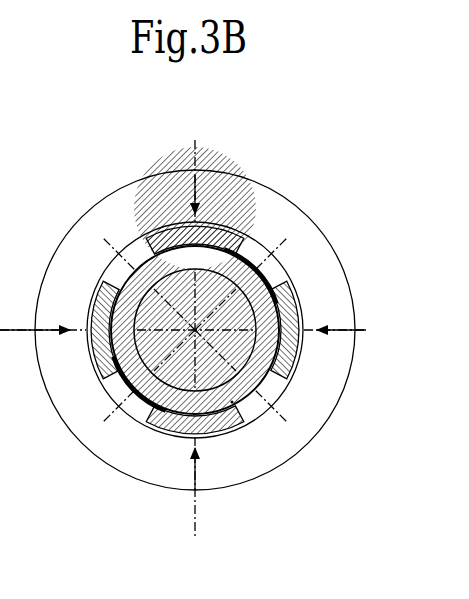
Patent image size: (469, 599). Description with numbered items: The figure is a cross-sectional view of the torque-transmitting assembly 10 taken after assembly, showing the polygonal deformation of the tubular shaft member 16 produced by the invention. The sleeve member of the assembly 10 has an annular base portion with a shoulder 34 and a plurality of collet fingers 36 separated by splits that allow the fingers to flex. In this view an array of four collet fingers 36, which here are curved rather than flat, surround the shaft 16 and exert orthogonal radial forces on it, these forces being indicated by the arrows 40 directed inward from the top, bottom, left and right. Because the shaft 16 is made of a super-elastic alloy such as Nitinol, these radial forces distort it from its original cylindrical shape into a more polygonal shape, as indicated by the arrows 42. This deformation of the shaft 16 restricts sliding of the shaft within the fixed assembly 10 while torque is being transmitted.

The torque-transmitting assembly 10 is at (95, 180).
The elongated shaft member 16 is at (267, 282).
The shoulder 34 is at (273, 222).
The collet fingers 36 is at (240, 232).
The arrows indicating radial forces 40 is at (190, 176).
The arrows indicating polygonal deformation 42 is at (246, 412).